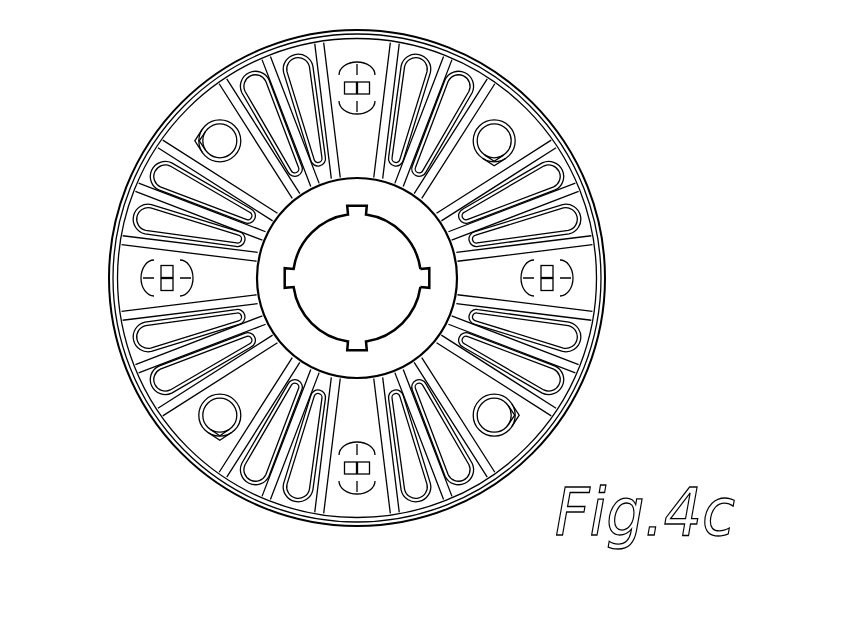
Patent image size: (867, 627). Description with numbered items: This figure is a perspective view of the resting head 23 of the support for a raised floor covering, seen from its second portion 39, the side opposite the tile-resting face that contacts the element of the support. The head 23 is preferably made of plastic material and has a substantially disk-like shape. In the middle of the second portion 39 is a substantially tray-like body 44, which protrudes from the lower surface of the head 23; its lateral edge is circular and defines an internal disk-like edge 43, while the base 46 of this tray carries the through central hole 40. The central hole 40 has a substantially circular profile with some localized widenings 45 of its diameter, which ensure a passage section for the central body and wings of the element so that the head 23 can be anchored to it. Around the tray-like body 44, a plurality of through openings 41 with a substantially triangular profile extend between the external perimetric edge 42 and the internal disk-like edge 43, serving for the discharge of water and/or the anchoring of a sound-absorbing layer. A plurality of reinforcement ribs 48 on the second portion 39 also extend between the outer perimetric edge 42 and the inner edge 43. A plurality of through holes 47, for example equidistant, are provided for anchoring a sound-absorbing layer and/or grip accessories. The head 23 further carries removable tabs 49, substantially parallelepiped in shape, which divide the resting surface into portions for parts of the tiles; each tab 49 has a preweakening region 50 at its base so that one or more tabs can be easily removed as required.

The resting head 23 is at (609, 180).
The second portion 39 is at (466, 380).
The central hole 40 is at (334, 232).
The through openings 41 is at (176, 184).
The external perimetric edge 42 is at (582, 292).
The internal edge 43 is at (443, 192).
The tray-like body 44 is at (270, 305).
The localized widenings 45 is at (413, 277).
The base 46 is at (218, 224).
The through holes 47 is at (230, 410).
The reinforcement ribs 48 is at (288, 243).
The removable tabs 49 is at (148, 279).
The preweakening region 50 is at (158, 255).